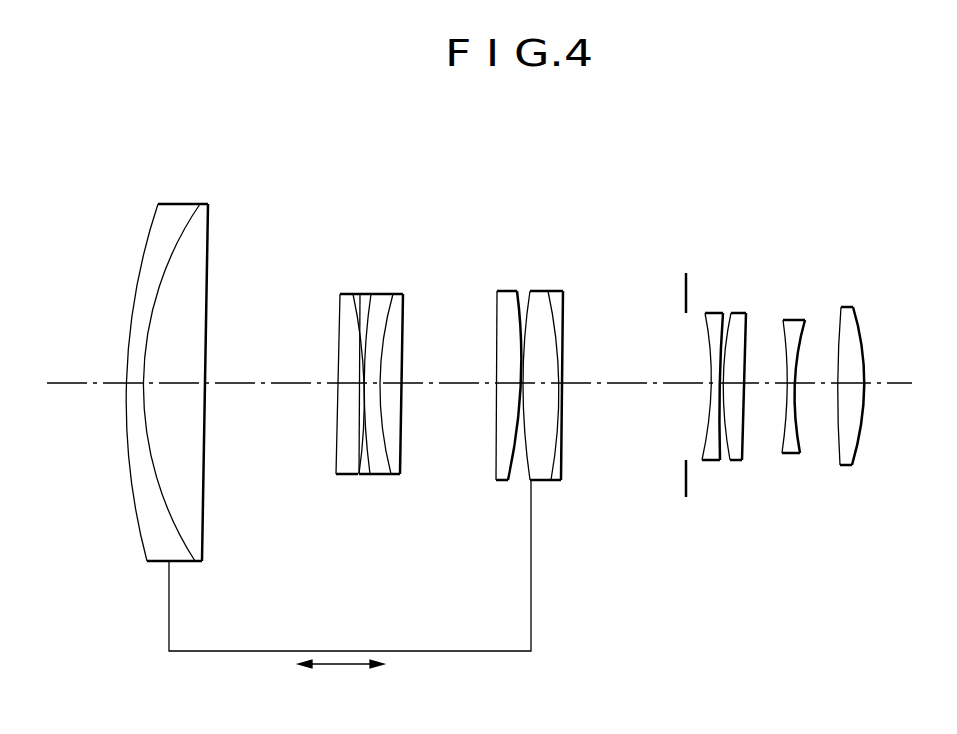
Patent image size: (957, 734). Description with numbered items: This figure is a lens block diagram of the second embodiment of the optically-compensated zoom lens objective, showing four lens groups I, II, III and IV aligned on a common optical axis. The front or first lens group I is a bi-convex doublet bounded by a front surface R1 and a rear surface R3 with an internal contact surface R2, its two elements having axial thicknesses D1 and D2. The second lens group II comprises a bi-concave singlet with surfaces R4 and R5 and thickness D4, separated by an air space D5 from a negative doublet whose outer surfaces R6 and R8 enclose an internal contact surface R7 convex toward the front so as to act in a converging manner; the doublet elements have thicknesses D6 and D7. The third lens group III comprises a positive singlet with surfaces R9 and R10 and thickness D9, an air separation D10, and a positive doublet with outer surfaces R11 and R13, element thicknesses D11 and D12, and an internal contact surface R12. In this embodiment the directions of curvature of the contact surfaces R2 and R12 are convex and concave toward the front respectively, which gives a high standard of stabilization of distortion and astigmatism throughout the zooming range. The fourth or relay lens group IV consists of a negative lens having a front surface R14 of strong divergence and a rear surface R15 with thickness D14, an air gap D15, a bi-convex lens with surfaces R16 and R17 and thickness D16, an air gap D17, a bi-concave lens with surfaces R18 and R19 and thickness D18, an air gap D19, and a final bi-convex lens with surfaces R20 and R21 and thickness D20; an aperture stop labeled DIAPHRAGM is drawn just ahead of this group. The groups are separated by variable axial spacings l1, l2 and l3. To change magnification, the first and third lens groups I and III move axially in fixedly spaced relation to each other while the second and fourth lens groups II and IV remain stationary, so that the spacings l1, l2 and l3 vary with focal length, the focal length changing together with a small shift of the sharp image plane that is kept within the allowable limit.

The first lens group I is at (143, 143).
The second lens group II is at (320, 175).
The third lens group III is at (625, 176).
The relay lens group IV is at (917, 178).
The front surface of first lens group R1 is at (158, 204).
The internal contact surface of first group doublet R2 is at (200, 204).
The rear surface of first lens group R3 is at (208, 204).
The front surface of bi-concave singlet R4 is at (340, 294).
The rear surface of bi-concave singlet R5 is at (356, 294).
The front surface of negative doublet R6 is at (372, 294).
The internal contact surface of second group doublet R7 is at (392, 294).
The rear surface of second lens group R8 is at (403, 294).
The front surface of positive singlet R9 is at (497, 291).
The rear surface of positive singlet R10 is at (518, 291).
The front surface of positive doublet R11 is at (531, 291).
The internal contact surface of third group doublet R12 is at (548, 291).
The rear surface of third lens group R13 is at (563, 291).
The front surface of negative lens R14 is at (705, 313).
The rear surface of negative lens R15 is at (723, 313).
The front surface of bi-convex lens R16 is at (731, 313).
The rear surface of bi-convex lens R17 is at (746, 313).
The front surface of bi-concave lens R18 is at (783, 320).
The rear surface of bi-concave lens R19 is at (805, 320).
The front surface of rear bi-convex lens R20 is at (841, 307).
The rear surface of rear bi-convex lens R21 is at (853, 307).
The axial thickness of front element of first group D1 is at (135, 386).
The axial thickness of rear element of first group D2 is at (178, 386).
The axial thickness of bi-concave singlet D4 is at (347, 475).
The axial air separation in second group D5 is at (362, 475).
The axial thickness of front element of second group doublet D6 is at (380, 475).
The axial thickness of rear element of second group doublet D7 is at (402, 458).
The axial thickness of positive singlet D9 is at (494, 458).
The axial air separation in third group D10 is at (513, 481).
The axial thickness of front element of third group doublet D11 is at (540, 481).
The axial thickness of rear element of third group doublet D12 is at (566, 458).
The axial thickness of negative lens D14 is at (709, 463).
The axial air separation after negative lens D15 is at (721, 462).
The axial thickness of bi-convex lens D16 is at (745, 462).
The axial air separation before bi-concave lens D17 is at (783, 455).
The axial thickness of bi-concave lens D18 is at (800, 455).
The axial air separation before rear bi-convex lens D19 is at (841, 467).
The axial thickness of rear bi-convex lens D20 is at (855, 467).
The variable axial spacing between first and second groups l1 is at (273, 385).
The variable axial spacing between second and third groups l2 is at (445, 385).
The variable axial spacing between third and fourth groups l3 is at (636, 385).
The diaphragm (aperture stop) DIAPHRAGM is at (683, 498).